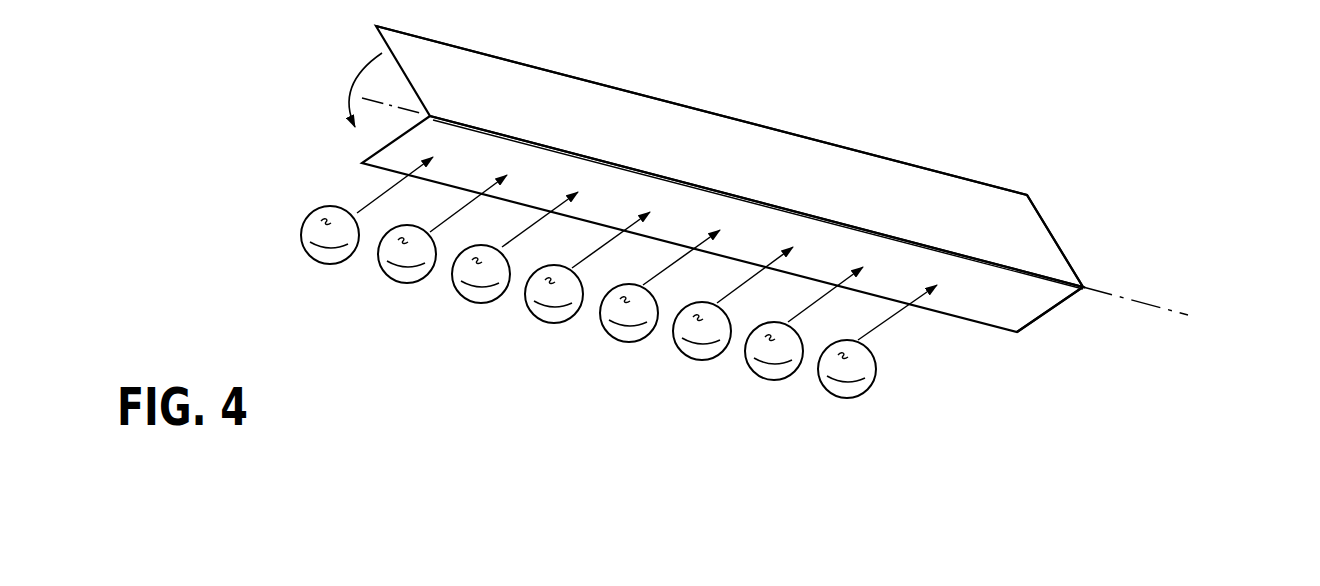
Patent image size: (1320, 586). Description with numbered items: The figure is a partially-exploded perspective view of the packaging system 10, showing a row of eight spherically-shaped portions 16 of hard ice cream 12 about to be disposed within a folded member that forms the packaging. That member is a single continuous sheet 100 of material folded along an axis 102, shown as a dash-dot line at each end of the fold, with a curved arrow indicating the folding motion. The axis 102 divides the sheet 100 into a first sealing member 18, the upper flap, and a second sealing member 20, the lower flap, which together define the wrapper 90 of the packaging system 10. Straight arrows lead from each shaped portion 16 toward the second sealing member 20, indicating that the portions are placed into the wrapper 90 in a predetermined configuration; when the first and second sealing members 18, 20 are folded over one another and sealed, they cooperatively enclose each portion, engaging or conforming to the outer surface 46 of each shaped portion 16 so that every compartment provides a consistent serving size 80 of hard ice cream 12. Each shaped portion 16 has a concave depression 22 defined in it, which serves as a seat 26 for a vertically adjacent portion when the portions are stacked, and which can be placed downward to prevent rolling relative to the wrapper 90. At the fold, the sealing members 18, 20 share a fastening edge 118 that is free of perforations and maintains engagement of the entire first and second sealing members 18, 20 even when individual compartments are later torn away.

The packaging system 10 is at (1157, 248).
The hard ice cream 12 is at (322, 257).
The shaped portion 16 is at (315, 202).
The first sealing member 18 is at (945, 205).
The second sealing member 20 is at (1005, 307).
The concave depression 22 is at (852, 348).
The seat 26 is at (335, 207).
The outer surface 46 is at (693, 343).
The consistent serving size 80 is at (510, 327).
The wrapper 90 is at (862, 145).
The continuous sheet 100 is at (715, 103).
The axis 102 is at (1140, 300).
The fastening edge 118 is at (1062, 275).